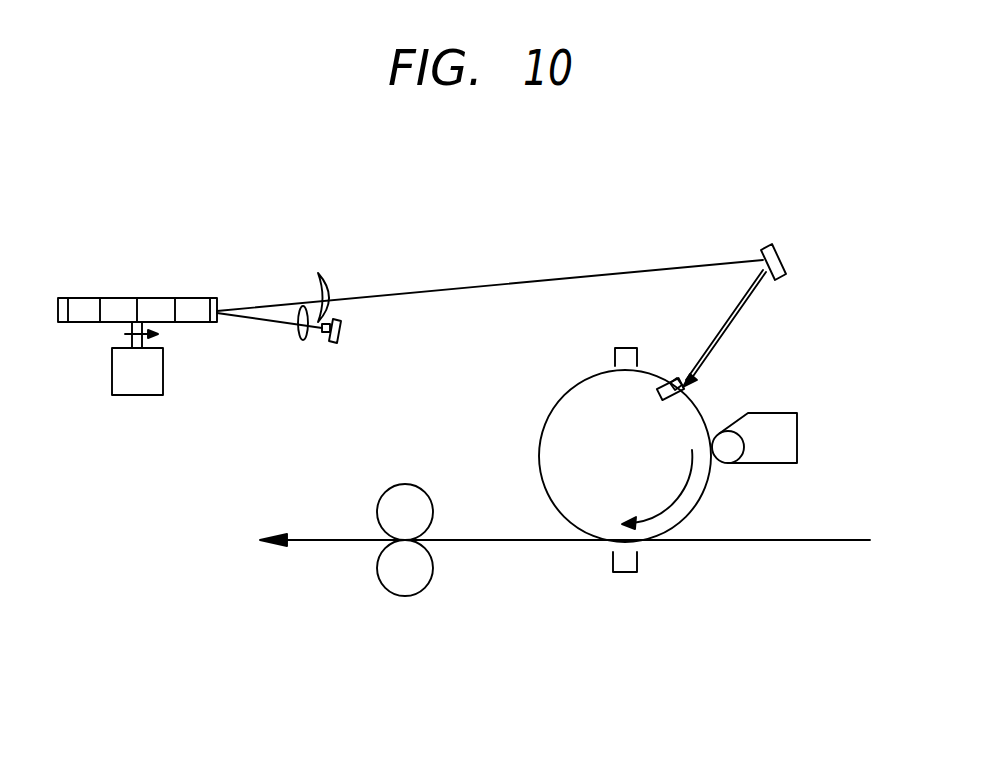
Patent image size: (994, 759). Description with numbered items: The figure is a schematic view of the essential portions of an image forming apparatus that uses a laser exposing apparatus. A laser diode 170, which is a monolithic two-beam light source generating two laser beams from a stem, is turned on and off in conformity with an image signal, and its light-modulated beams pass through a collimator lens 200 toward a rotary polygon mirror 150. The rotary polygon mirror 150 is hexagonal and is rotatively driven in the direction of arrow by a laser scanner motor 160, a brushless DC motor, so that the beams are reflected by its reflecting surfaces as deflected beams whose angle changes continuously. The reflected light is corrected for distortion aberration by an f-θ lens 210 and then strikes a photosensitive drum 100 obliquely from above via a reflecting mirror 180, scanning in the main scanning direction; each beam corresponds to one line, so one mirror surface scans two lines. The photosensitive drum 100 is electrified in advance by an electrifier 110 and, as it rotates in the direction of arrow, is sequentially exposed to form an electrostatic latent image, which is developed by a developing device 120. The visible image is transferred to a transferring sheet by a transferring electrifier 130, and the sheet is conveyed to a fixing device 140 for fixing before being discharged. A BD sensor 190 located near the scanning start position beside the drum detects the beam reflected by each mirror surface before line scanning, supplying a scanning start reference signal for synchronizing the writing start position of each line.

The photosensitive drum 100 is at (582, 385).
The electrifier 110 is at (637, 343).
The developing device 120 is at (797, 424).
The transferring electrifier 130 is at (620, 572).
The fixing device 140 is at (405, 484).
The rotary polygon mirror 150 is at (125, 298).
The laser scanner motor 160 is at (163, 380).
The laser diode 170 is at (328, 342).
The reflecting mirror 180 is at (784, 255).
The BD sensor 190 is at (687, 393).
The collimator lens 200 is at (298, 334).
The f-θ lens 210 is at (330, 281).